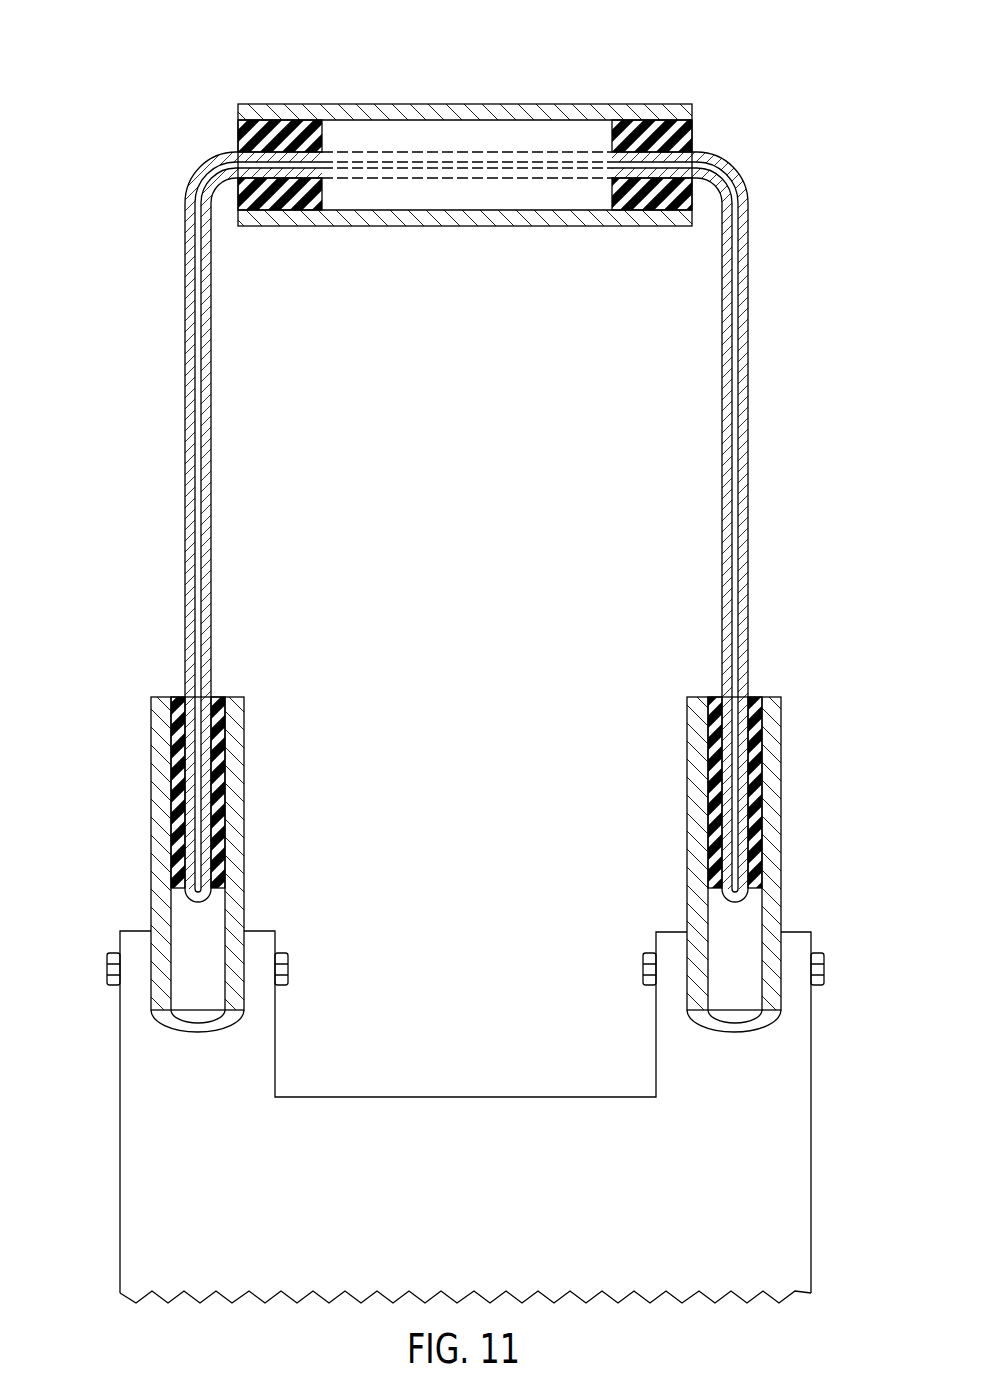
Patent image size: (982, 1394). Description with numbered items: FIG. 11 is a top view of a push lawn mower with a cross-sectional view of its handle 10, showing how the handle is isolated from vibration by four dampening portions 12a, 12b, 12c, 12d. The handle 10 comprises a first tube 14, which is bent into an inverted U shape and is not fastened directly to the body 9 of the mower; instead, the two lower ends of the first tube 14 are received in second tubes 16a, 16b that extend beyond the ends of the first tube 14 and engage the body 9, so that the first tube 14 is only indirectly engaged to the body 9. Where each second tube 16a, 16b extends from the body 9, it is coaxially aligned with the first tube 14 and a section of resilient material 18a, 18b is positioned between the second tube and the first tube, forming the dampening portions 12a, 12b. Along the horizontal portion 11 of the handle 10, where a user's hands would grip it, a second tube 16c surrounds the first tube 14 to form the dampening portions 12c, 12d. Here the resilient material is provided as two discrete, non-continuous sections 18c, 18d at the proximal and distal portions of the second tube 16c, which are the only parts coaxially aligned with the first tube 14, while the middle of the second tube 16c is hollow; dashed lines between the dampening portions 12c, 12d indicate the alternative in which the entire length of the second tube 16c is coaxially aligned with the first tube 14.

The body 9 is at (474, 1176).
The handle 10 is at (146, 384).
The horizontal portion 11 is at (421, 64).
The dampening portion 12a is at (133, 811).
The dampening portion 12b is at (795, 821).
The dampening portion 12c is at (287, 95).
The dampening portion 12d is at (643, 94).
The first tube 14 is at (185, 673).
The second tube 16a is at (246, 747).
The second tube 16b is at (783, 747).
The second tube 16c is at (337, 101).
The section of resilient material 18a is at (213, 696).
The section of resilient material 18b is at (755, 696).
The section of resilient material 18c is at (238, 138).
The section of resilient material 18d is at (688, 137).